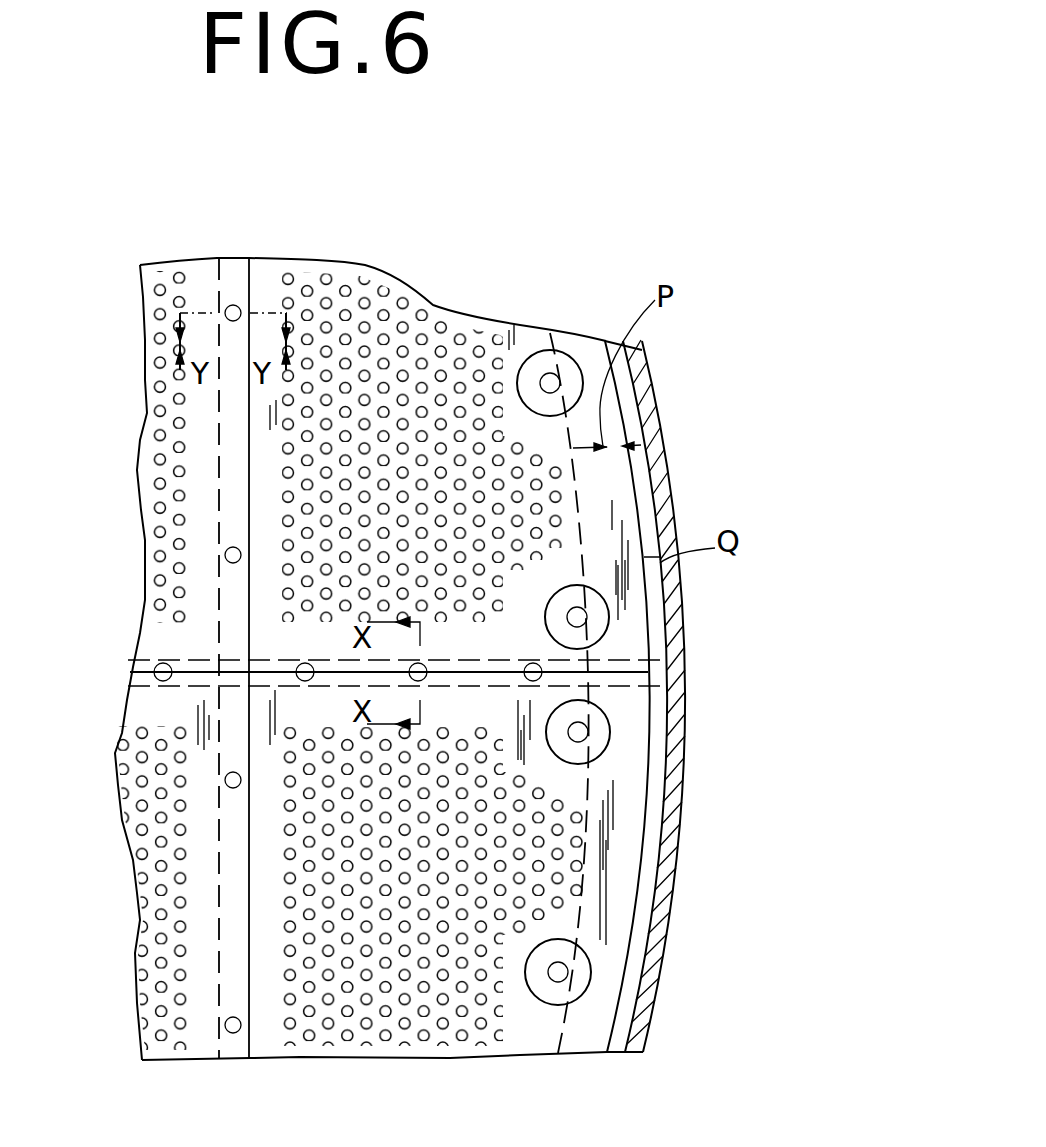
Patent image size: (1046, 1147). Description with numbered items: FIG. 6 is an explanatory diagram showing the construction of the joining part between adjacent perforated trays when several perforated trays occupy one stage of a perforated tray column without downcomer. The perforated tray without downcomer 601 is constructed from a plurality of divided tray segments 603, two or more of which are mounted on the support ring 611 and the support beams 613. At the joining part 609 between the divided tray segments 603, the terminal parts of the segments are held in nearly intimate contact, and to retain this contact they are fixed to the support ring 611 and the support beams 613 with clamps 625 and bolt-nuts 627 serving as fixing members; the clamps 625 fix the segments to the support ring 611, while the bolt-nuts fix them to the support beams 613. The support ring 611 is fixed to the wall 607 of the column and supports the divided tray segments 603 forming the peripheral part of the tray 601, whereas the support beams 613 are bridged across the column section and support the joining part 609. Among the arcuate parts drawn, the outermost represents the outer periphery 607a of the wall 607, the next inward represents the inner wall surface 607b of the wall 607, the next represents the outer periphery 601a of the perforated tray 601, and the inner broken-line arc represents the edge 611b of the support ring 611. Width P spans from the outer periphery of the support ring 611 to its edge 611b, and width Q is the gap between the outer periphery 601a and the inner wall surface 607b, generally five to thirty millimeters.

The perforated tray without downcomer 601 is at (607, 417).
The outer periphery of the perforated tray without downcomer 601a is at (652, 473).
The divided tray segments 603 is at (453, 327).
The wall of the perforated tray column without downcomer 607 is at (646, 1049).
The outer periphery of the wall 607a is at (670, 928).
The inner wall surface of the wall 607b is at (668, 820).
The joining part 609 is at (650, 670).
The support ring 611 is at (580, 1038).
The edge of the support ring 611b is at (583, 892).
The support beams 613 is at (215, 292).
The clamps 625 is at (567, 373).
The bolt-nuts 627 is at (233, 306).